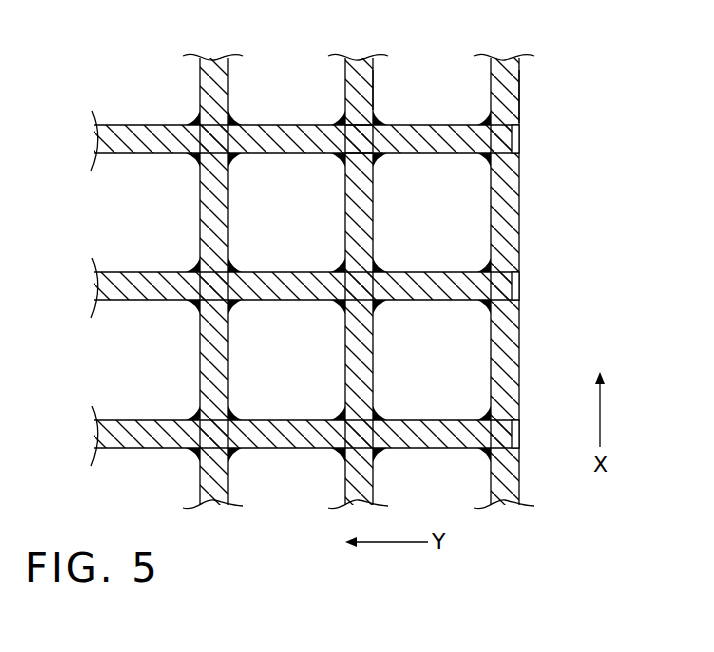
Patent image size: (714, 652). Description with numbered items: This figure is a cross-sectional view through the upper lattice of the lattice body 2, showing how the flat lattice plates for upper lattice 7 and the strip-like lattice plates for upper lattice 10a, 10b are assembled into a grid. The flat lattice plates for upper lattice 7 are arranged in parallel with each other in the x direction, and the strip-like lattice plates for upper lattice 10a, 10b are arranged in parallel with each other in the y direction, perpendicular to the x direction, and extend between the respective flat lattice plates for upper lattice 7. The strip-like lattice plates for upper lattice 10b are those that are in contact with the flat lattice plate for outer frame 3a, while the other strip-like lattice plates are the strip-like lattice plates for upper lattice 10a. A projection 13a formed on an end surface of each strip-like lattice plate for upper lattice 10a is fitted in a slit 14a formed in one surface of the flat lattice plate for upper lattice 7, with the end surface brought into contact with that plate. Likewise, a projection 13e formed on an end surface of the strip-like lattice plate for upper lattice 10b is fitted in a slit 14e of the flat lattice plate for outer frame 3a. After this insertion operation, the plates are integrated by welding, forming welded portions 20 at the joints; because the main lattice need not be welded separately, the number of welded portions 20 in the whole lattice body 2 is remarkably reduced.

The lattice body 2 is at (349, 259).
The flat lattice plate for upper lattice 7 is at (208, 500).
The flat lattice plate for outer frame 3a is at (497, 497).
The strip-like lattice plate for upper lattice 10a is at (141, 125).
The strip-like lattice plate for upper lattice 10b is at (466, 125).
The projection 13a is at (352, 125).
The projection 13e is at (513, 145).
The slit 14a is at (362, 108).
The slit 14e is at (508, 120).
The welded portion 20 is at (338, 123).